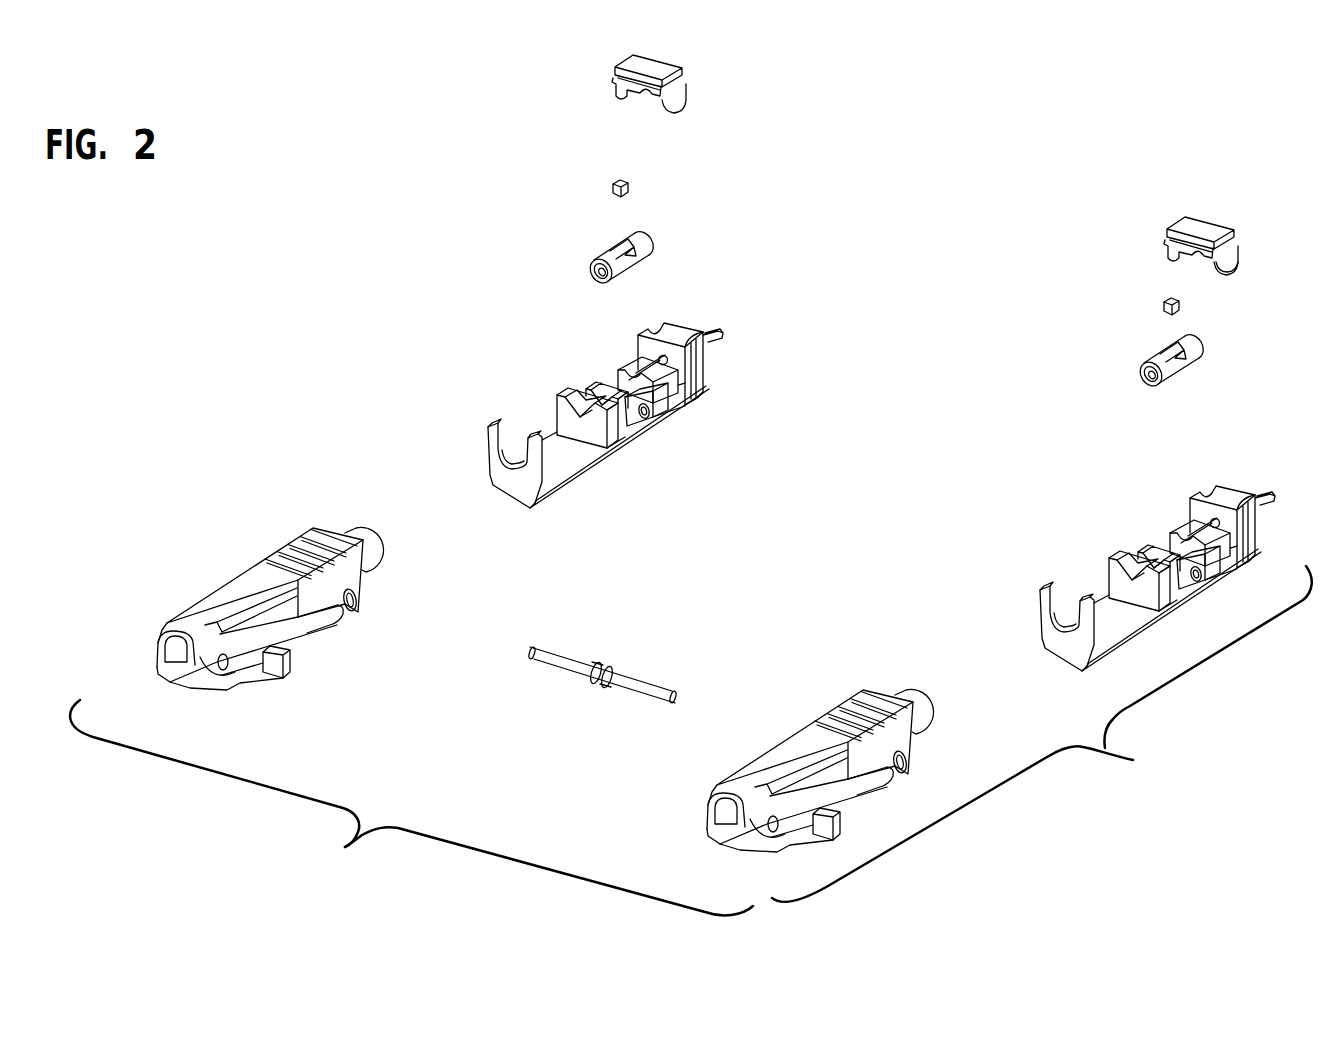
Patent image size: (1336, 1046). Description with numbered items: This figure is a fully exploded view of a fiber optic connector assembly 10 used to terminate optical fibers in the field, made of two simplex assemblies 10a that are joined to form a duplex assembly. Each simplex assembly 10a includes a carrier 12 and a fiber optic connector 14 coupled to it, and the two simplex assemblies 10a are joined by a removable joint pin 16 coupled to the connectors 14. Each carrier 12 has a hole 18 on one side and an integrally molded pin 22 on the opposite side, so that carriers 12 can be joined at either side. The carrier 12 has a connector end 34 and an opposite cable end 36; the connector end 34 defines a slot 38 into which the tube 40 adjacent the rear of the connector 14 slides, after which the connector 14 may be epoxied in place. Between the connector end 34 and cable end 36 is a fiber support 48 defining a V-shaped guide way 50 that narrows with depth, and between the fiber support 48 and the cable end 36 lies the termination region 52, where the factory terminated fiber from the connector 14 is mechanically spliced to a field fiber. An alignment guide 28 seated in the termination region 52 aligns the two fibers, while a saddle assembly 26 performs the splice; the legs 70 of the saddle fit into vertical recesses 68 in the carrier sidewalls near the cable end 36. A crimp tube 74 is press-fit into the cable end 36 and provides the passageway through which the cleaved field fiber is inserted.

The fiber optic connector assembly 10 is at (411, 807).
The simplex assembly 10a is at (1042, 734).
The carrier 12 is at (1230, 492).
The fiber optic connector 14 is at (800, 740).
The removable joint pin 16 is at (638, 677).
The hole 18 is at (647, 412).
The integrally molded pin 22 is at (585, 387).
The saddle assembly 26 is at (1250, 230).
The alignment guide 28 is at (1216, 326).
The connector end 34 is at (512, 490).
The cable end 36 is at (710, 375).
The slot 38 is at (1068, 612).
The tube 40 is at (361, 525).
The fiber support 48 is at (1117, 553).
The V-shaped guide way 50 is at (1130, 562).
The termination region 52 is at (603, 348).
The vertical recess 68 is at (1227, 547).
The legs 70 is at (1227, 265).
The crimp tube 74 is at (720, 340).